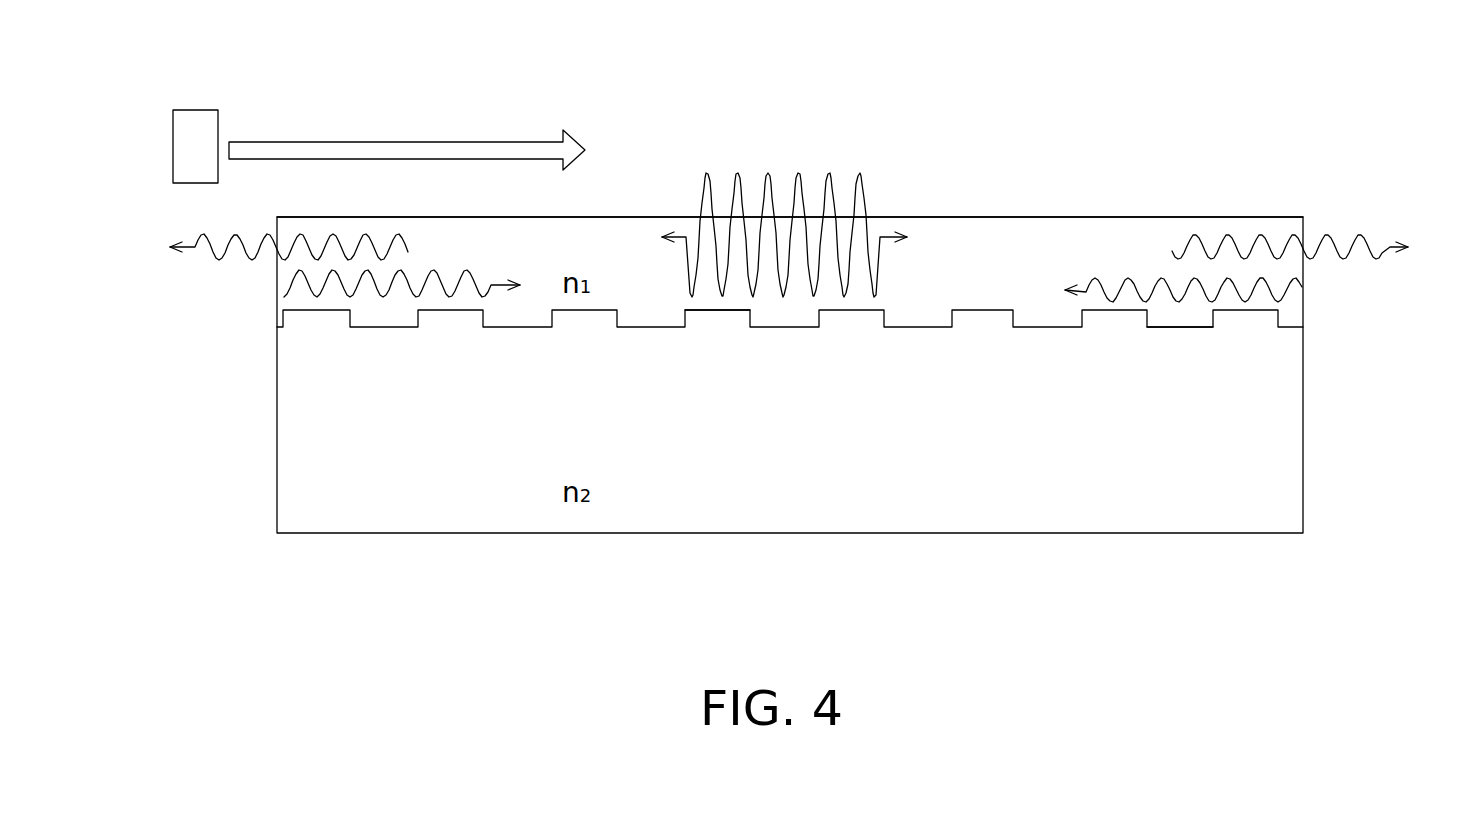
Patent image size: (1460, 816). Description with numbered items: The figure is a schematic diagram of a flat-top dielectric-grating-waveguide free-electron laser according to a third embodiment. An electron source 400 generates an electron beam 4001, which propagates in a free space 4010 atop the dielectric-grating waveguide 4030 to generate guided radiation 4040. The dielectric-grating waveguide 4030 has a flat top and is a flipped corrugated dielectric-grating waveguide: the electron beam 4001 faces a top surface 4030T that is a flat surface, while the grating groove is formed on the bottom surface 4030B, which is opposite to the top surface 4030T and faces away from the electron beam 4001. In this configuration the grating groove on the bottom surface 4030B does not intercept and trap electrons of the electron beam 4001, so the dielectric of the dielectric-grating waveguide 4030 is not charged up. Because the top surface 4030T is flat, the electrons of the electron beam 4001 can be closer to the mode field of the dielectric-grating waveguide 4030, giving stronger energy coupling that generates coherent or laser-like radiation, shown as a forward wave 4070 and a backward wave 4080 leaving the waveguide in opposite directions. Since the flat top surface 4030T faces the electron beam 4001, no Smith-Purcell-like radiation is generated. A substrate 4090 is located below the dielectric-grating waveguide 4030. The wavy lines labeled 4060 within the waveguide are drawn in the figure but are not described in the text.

The electron source 400 is at (190, 120).
The electron beam 4001 is at (410, 147).
The backward wave 4080 is at (218, 230).
The guided light waves in waveguide layer 4060 is at (342, 295).
The free space 4010 is at (801, 216).
The dielectric-grating waveguide 4030 is at (1032, 283).
The top surface 4030T is at (1193, 217).
The bottom surface 4030B is at (1180, 328).
The forward wave 4070 is at (1348, 223).
The substrate 4090 is at (897, 488).
The guided radiation 4040 is at (720, 300).